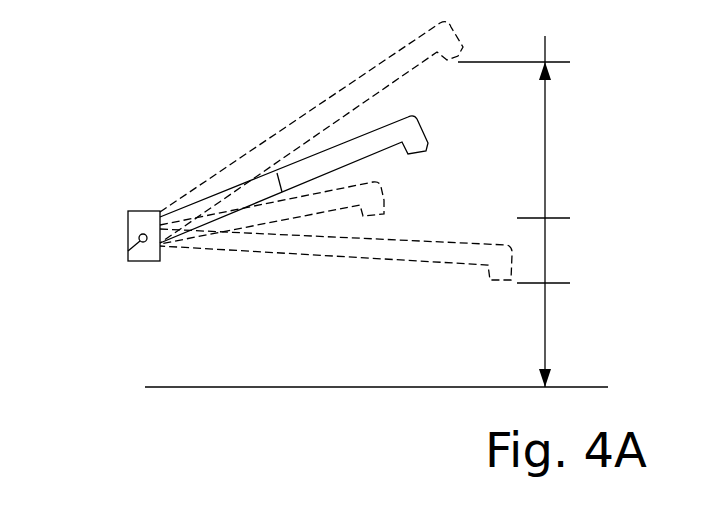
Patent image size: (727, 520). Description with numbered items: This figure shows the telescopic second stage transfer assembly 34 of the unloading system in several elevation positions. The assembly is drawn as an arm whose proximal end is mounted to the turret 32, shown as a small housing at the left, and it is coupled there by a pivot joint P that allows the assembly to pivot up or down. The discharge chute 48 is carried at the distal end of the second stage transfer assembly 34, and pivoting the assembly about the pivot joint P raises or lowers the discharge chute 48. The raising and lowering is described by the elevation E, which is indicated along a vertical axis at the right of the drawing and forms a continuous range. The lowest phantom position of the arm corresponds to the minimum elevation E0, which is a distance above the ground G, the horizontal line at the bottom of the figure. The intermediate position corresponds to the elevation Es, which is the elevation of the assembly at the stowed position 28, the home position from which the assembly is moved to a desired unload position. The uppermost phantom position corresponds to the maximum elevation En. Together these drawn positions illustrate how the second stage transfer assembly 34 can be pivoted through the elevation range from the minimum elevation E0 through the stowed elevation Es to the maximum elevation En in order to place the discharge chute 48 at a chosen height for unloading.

The stowed position 28 is at (396, 197).
The turret 32 is at (128, 232).
The second stage transfer assembly 34 is at (262, 105).
The discharge chute 48 is at (428, 147).
The pivot joint P is at (128, 251).
The elevation E is at (544, 200).
The maximum elevation En is at (528, 63).
The stowed position elevation Es is at (556, 219).
The minimum elevation E0 is at (557, 284).
The ground G is at (575, 387).